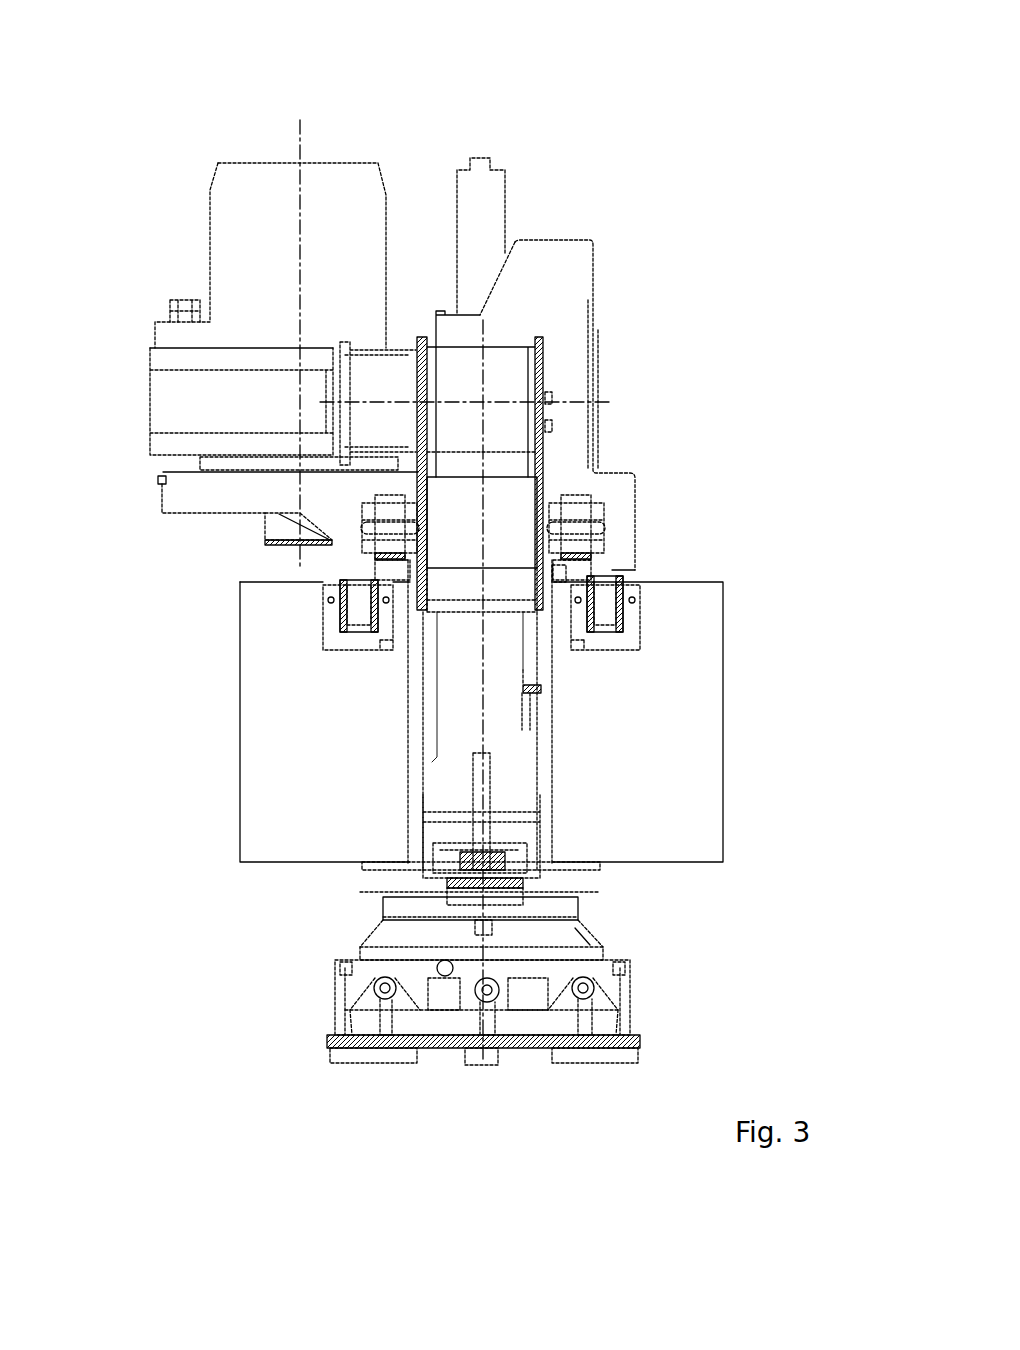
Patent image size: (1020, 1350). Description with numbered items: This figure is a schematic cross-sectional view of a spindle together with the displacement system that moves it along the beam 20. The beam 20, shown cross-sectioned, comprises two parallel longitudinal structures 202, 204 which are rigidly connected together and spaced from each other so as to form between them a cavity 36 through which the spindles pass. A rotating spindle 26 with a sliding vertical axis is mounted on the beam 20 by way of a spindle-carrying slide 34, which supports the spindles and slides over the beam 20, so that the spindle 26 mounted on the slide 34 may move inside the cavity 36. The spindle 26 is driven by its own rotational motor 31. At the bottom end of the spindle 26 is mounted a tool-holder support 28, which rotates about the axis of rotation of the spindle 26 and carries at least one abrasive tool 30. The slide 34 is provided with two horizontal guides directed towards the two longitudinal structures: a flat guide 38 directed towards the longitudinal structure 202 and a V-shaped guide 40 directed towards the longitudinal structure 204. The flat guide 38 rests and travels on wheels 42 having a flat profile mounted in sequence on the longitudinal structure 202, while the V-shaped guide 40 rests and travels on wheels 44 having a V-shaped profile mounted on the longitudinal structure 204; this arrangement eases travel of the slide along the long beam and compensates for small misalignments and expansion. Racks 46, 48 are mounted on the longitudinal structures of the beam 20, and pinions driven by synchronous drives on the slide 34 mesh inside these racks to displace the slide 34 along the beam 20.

The rotational motor 31 is at (322, 160).
The rotating spindle 26 is at (550, 492).
The slide 34 is at (635, 478).
The rack 46 is at (598, 558).
The flat guide 38 is at (640, 578).
The wheels with flat profile 42 is at (608, 632).
The rack 48 is at (378, 555).
The V-shaped guide 40 is at (340, 580).
The wheels with V-shaped profile 44 is at (363, 628).
The longitudinal structure 204 is at (268, 775).
The longitudinal structure 202 is at (718, 738).
The beam 20 is at (717, 806).
The cavity 36 is at (548, 812).
The tool-holder support 28 is at (590, 940).
The abrasive tool 30 is at (583, 1068).